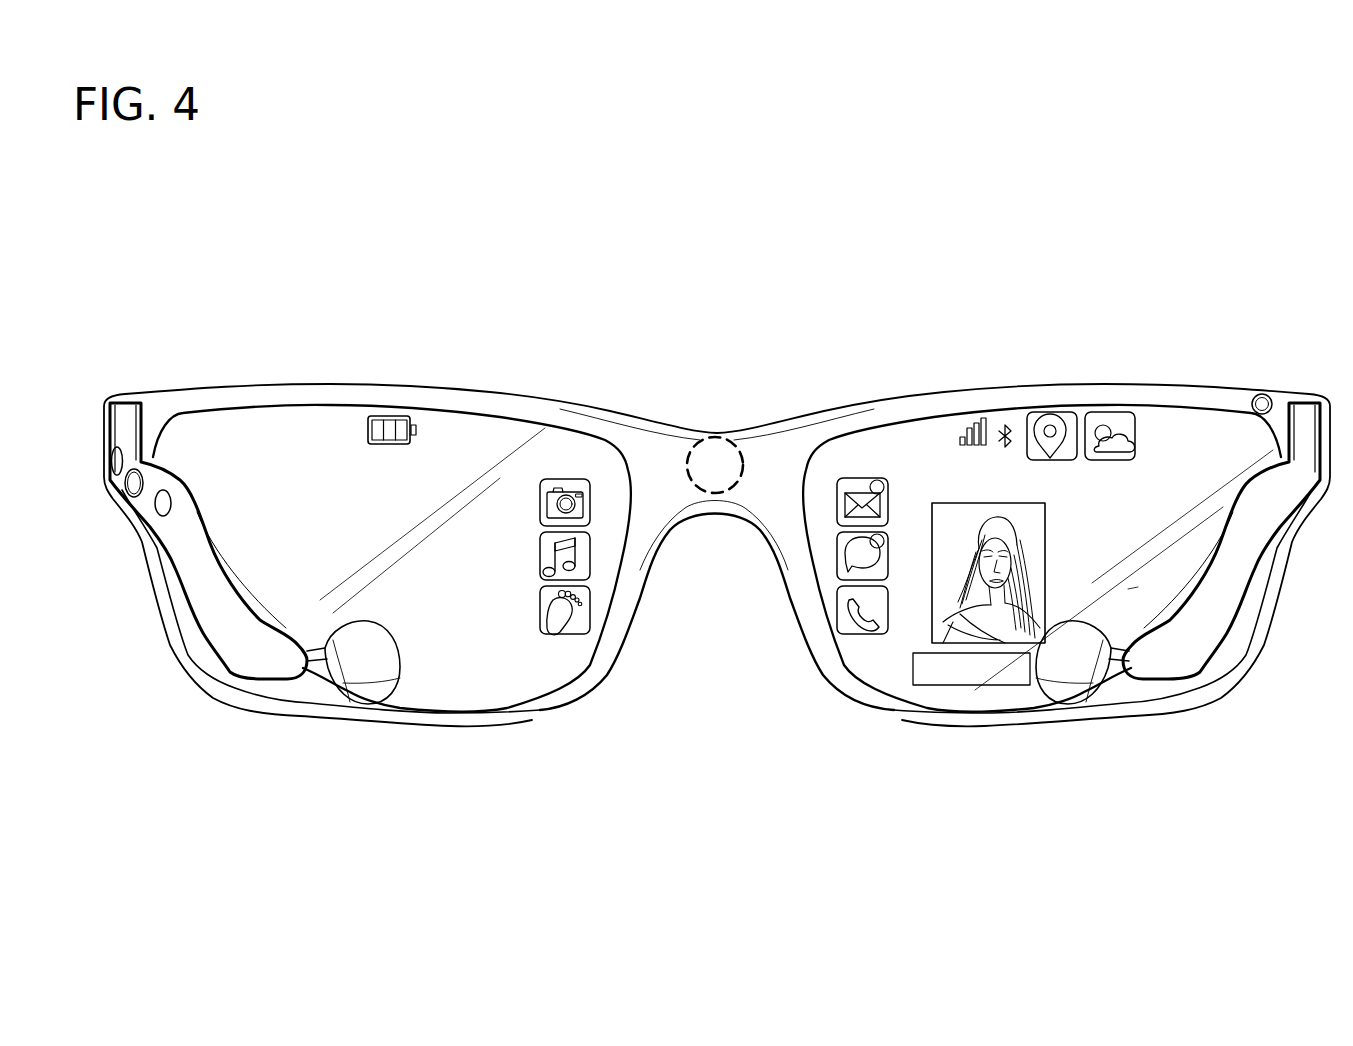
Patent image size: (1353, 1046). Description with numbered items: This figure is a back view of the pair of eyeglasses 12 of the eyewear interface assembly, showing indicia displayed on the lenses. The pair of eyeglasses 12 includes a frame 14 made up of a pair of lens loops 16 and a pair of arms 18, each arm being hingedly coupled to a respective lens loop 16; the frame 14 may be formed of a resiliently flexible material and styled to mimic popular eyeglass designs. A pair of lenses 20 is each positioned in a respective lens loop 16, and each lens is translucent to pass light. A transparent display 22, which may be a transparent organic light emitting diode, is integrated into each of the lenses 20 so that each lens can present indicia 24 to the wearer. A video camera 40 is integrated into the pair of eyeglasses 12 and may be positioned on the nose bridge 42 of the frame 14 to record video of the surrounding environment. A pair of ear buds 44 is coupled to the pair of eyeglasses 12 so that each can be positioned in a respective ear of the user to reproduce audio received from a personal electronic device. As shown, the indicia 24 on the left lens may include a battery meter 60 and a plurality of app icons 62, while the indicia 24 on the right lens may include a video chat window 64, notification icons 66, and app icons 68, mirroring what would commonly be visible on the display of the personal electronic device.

The pair of eyeglasses 12 is at (491, 370).
The frame 14 is at (915, 392).
The lens loops 16 is at (505, 726).
The arms 18 is at (208, 548).
The lenses 20 is at (454, 393).
The transparent display 22 is at (334, 499).
The indicia 24 is at (570, 466).
The video camera 40 is at (745, 456).
The nose bridge 42 is at (712, 528).
The ear buds 44 is at (393, 683).
The battery meter 60 is at (385, 403).
The app icons 62 is at (598, 572).
The video chat window 64 is at (926, 612).
The notification icons 66 is at (1051, 404).
The app icons 68 is at (830, 565).